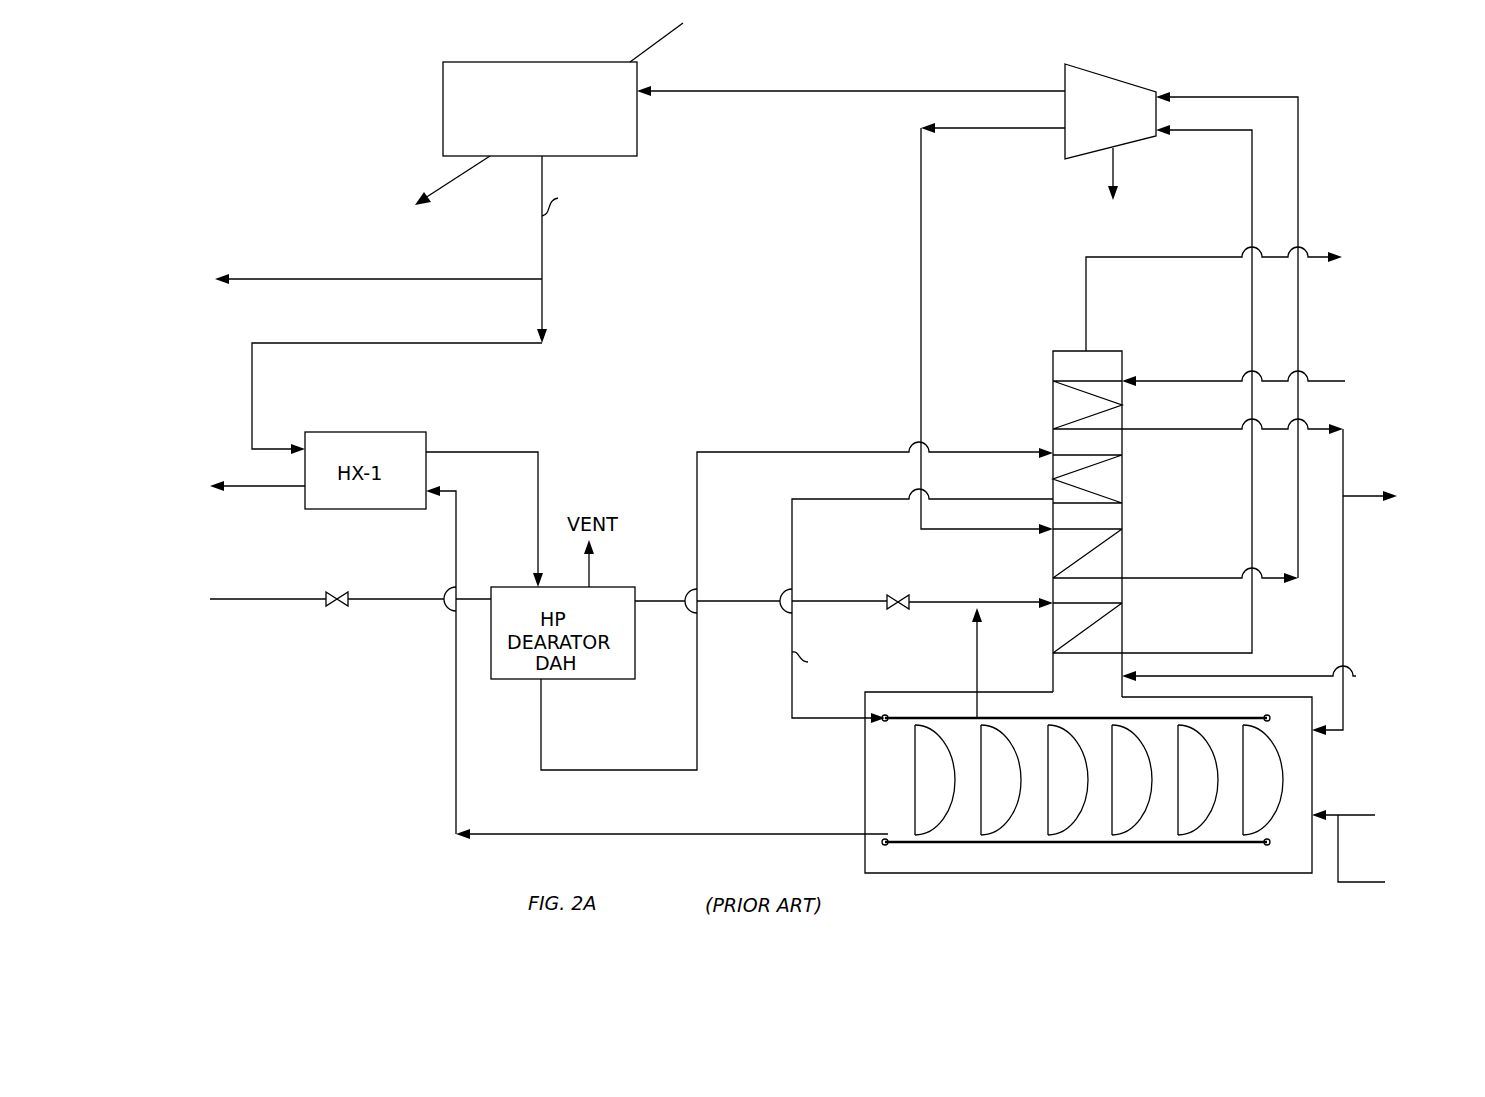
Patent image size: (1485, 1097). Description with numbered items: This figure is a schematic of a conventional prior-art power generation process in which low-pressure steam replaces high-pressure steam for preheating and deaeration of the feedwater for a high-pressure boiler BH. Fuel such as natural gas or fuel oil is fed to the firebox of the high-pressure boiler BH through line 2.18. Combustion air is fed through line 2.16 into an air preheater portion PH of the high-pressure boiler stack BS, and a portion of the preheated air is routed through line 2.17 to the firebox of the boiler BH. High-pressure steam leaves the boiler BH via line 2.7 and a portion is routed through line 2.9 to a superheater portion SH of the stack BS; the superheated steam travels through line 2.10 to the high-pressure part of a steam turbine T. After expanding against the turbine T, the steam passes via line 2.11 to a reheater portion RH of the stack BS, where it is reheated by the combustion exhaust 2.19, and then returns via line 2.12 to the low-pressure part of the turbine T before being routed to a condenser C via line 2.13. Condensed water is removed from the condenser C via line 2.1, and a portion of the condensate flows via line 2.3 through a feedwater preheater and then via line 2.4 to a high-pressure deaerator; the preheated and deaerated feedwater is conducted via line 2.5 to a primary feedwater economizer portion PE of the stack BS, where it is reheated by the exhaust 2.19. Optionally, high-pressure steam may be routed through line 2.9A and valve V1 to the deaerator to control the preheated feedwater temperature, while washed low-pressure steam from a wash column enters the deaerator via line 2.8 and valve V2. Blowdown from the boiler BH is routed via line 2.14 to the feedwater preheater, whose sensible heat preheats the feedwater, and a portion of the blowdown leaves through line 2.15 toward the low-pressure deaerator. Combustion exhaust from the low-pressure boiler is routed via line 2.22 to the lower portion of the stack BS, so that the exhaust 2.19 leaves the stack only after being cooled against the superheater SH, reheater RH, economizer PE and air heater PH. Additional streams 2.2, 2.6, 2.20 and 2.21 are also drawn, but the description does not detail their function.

The condenser C is at (509, 56).
The steam turbine T is at (1149, 76).
The high-pressure boiler stack BS is at (1124, 362).
The air preheater portion PH is at (1053, 398).
The primary feedwater economizer portion PE is at (1155, 474).
The reheater portion RH is at (1106, 548).
The superheater portion SH is at (1106, 628).
The high-pressure boiler BH is at (1328, 778).
The valve V1 is at (899, 609).
The valve V2 is at (338, 606).
The condensed water line 2.1 is at (614, 249).
The condensate line 2.2 is at (377, 268).
The condensate line to feedwater preheater 2.3 is at (397, 386).
The preheated condensate line 2.4 is at (484, 505).
The deaerated feedwater line 2.5 is at (797, 596).
The feedwater line to boiler 2.6 is at (922, 597).
The high-pressure steam line 2.7 is at (998, 663).
The washed low-pressure steam line 2.8 is at (349, 628).
The steam line to superheater 2.9 is at (981, 591).
The optional steam line to deaerator 2.9A is at (761, 596).
The superheated steam line 2.10 is at (1212, 363).
The expanded steam line to reheater 2.11 is at (993, 328).
The reheated steam line 2.12 is at (1358, 582).
The turbine exhaust line to condenser 2.13 is at (851, 80).
The blowdown line 2.14 is at (654, 691).
The blowdown line to low-pressure deaerator 2.15 is at (257, 474).
The combustion air line 2.16 is at (1251, 371).
The preheated air line 2.17 is at (1239, 417).
The fuel line 2.18 is at (1367, 848).
The combustion exhaust 2.19 is at (1242, 290).
The turbine shaft output 2.20 is at (1119, 188).
The condenser cooling outlet 2.21 is at (452, 183).
The low-pressure boiler exhaust line 2.22 is at (1281, 685).